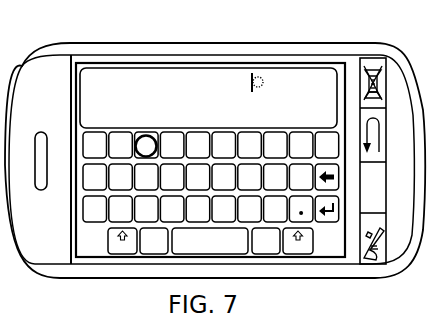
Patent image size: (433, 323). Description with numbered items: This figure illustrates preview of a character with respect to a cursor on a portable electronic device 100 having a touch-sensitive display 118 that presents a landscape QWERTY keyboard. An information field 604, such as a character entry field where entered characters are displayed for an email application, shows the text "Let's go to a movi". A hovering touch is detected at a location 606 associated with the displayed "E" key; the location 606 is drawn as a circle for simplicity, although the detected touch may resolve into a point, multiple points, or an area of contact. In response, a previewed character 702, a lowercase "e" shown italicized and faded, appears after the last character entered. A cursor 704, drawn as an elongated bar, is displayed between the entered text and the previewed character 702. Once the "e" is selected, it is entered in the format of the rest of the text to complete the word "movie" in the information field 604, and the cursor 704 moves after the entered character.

The electronic device 100 is at (402, 305).
The touch-sensitive display 118 is at (97, 247).
The information field 604 is at (135, 75).
The location 606 is at (146, 131).
The previewed character 702 is at (262, 76).
The cursor 704 is at (250, 72).